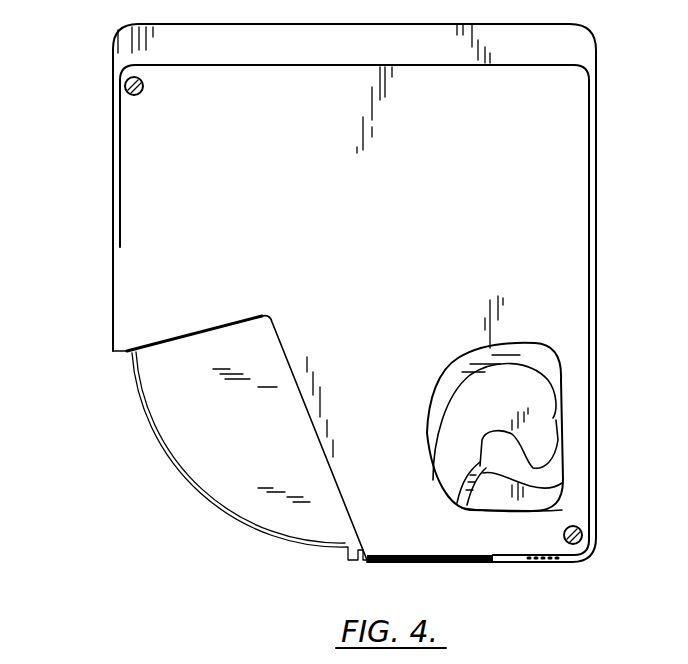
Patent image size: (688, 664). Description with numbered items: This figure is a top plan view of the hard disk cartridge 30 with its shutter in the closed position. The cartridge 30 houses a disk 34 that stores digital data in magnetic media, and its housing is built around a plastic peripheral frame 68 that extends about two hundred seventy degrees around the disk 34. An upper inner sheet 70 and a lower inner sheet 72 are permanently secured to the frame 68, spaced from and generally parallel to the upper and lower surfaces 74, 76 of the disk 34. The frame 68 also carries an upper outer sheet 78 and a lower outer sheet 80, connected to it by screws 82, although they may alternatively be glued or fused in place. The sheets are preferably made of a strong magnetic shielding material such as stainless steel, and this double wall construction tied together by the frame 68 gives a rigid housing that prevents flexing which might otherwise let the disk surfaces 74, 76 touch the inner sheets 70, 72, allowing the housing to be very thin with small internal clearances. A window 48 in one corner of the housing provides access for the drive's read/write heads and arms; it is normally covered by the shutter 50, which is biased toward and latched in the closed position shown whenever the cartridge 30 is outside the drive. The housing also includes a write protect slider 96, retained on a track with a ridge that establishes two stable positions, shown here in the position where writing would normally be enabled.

The hard disk cartridge 30 is at (104, 226).
The peripheral frame 68 is at (587, 57).
The upper outer sheet 78 is at (570, 300).
The screws 82 is at (126, 92).
The write protect slider 96 is at (540, 566).
The window 48 is at (168, 362).
The shutter 50 is at (160, 456).
The upper inner sheet 70 is at (456, 382).
The upper surface of the disk 74 is at (540, 389).
The lower inner sheet 72 is at (520, 456).
The lower outer sheet 80 is at (555, 495).
The lower surface of the disk 76 is at (466, 500).
The disk 34 is at (452, 471).